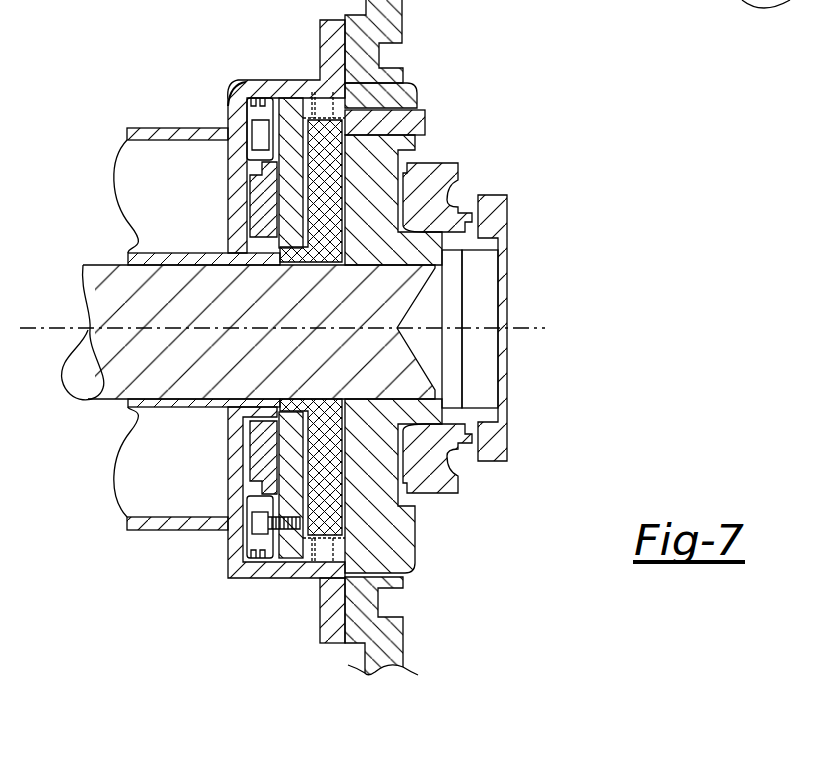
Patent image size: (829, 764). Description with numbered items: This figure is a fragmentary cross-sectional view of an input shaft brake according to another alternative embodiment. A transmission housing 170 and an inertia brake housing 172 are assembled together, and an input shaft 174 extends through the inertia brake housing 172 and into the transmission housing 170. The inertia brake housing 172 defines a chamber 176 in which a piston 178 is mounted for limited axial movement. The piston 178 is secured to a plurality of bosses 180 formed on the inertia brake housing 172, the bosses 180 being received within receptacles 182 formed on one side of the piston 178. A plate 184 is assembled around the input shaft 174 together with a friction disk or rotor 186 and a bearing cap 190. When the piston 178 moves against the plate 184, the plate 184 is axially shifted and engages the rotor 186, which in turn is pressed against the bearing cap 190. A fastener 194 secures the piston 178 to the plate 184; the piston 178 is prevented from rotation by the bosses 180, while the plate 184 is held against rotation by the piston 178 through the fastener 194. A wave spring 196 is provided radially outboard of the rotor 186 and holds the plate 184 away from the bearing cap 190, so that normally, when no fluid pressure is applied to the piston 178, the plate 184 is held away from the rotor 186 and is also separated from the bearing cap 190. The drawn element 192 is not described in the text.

The transmission housing 170 is at (385, 23).
The inertia brake housing 172 is at (238, 90).
The input shaft 174 is at (97, 283).
The chamber 176 is at (256, 461).
The piston 178 is at (271, 209).
The bosses 180 is at (253, 137).
The receptacles 182 is at (232, 85).
The plate 184 is at (293, 562).
The friction disk or rotor 186 is at (330, 147).
The bearing cap 190 is at (383, 100).
The flange 192 is at (450, 168).
The fastener 194 is at (268, 520).
The wave spring 196 is at (318, 564).